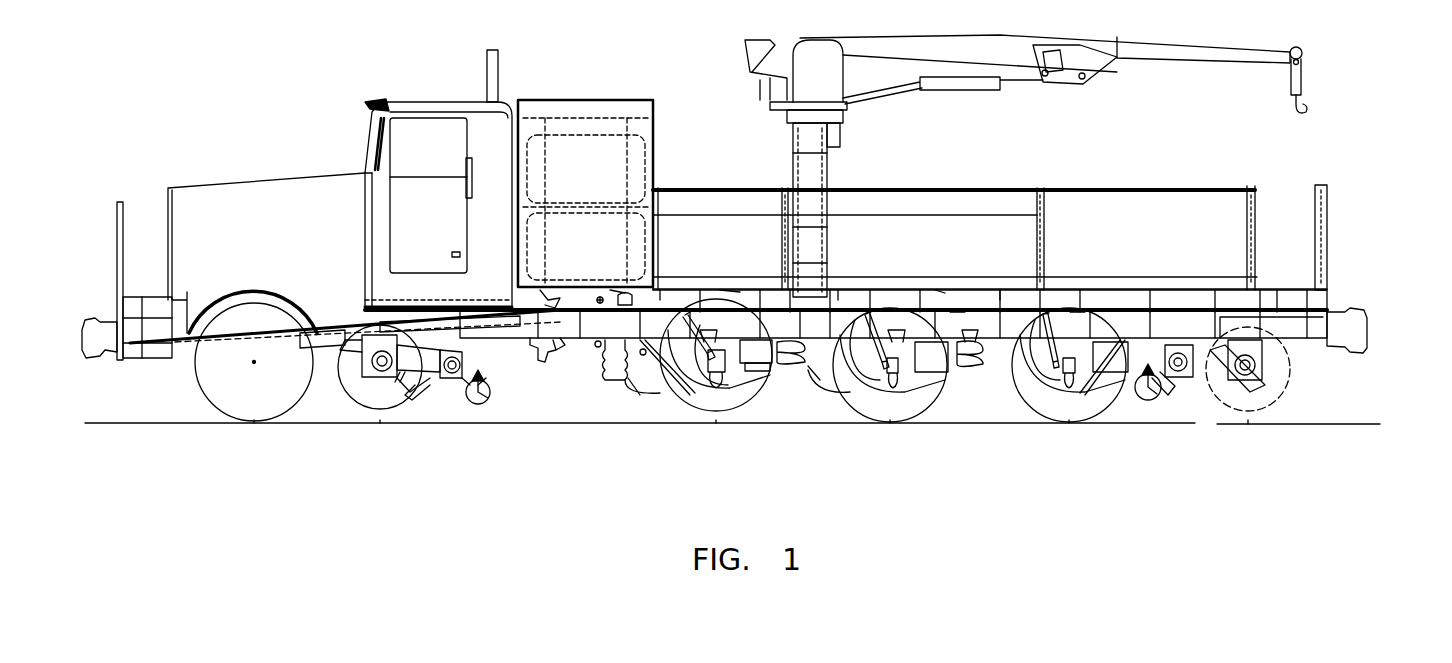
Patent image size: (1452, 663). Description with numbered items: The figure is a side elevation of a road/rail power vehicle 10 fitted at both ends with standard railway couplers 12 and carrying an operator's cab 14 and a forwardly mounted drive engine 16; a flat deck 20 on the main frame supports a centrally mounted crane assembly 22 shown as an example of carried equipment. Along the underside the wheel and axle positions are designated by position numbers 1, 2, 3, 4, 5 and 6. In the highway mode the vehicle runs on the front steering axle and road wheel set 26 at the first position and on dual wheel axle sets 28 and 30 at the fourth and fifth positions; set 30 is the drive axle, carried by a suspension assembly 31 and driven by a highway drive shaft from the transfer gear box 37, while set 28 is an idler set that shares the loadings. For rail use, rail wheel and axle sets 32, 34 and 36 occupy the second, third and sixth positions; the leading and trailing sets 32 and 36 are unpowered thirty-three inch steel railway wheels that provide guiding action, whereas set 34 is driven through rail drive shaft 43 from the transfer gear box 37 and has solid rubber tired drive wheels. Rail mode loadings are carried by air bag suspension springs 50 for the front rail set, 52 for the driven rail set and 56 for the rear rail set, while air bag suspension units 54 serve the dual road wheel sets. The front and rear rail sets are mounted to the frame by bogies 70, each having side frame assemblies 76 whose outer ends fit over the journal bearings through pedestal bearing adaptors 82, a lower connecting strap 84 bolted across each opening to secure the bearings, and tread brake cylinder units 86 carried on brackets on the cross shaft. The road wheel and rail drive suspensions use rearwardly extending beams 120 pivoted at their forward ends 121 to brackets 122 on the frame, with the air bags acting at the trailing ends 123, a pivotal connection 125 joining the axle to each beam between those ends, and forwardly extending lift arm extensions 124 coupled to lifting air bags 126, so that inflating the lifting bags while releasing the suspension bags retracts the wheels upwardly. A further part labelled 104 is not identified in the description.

The wheel and axle position 1 is at (243, 458).
The wheel and axle position 2 is at (375, 458).
The wheel and axle position 3 is at (712, 458).
The wheel and axle position 4 is at (884, 458).
The wheel and axle position 5 is at (1064, 458).
The wheel and axle position 6 is at (1245, 463).
The road/rail power vehicle 10 is at (255, 172).
The railway couplers 12 is at (88, 322).
The operator's cab 14 is at (436, 105).
The drive engine 16 is at (206, 218).
The flat deck 20 is at (985, 300).
The crane assembly 22 is at (970, 87).
The front steering axle and road wheel set 26 is at (205, 402).
The dual wheel axle set 28 is at (945, 400).
The dual wheel and axle set 30 is at (1005, 400).
The suspension assembly 31 is at (642, 400).
The rail wheel and axle set 32 is at (365, 410).
The rail drive wheel and axle set 34 is at (700, 388).
The rail wheel and axle set 36 is at (617, 290).
The transfer gear box 37 is at (540, 355).
The rail drive shaft 43 is at (628, 365).
The air bag suspension springs 50 is at (390, 306).
The air bag suspension springs 52 is at (730, 290).
The air bag suspension units 54 is at (958, 300).
The air bag suspension springs 56 is at (1268, 290).
The bogie 70 is at (462, 368).
The side frame assemblies 76 is at (425, 325).
The pedestal bearing adaptors 82 is at (333, 333).
The lower connecting strap 84 is at (378, 375).
The tread brake cylinder units 86 is at (492, 392).
The support bracket 104 is at (405, 378).
The rearwardly extending beams 120 is at (700, 386).
The forward ends 121 is at (637, 380).
The brackets 122 is at (665, 285).
The trailing ends 123 is at (745, 400).
The lift arm extensions 124 is at (640, 385).
The pivotal connection 125 is at (733, 380).
The lifting air bag 126 is at (790, 366).